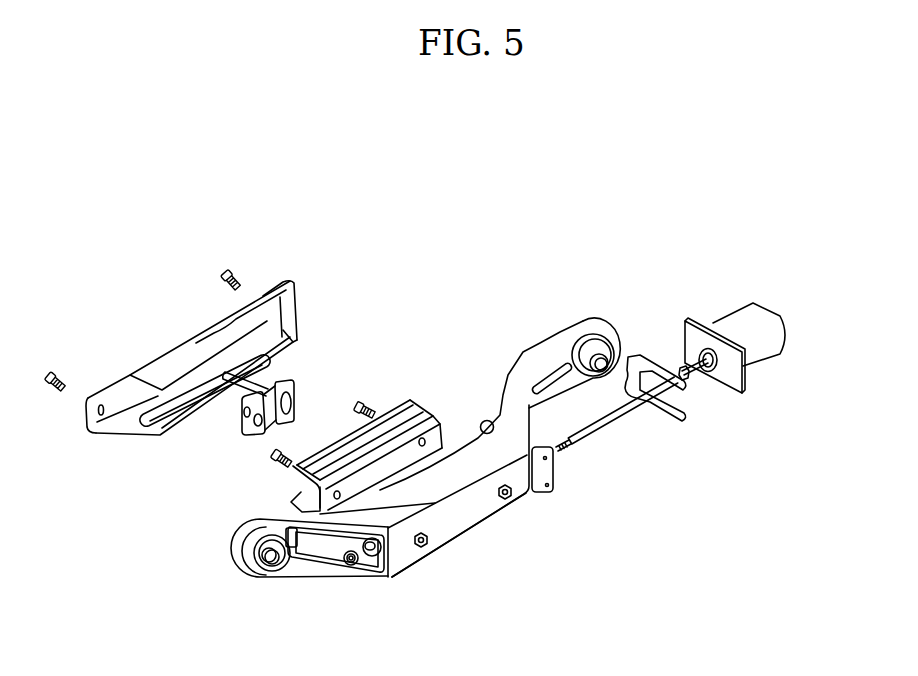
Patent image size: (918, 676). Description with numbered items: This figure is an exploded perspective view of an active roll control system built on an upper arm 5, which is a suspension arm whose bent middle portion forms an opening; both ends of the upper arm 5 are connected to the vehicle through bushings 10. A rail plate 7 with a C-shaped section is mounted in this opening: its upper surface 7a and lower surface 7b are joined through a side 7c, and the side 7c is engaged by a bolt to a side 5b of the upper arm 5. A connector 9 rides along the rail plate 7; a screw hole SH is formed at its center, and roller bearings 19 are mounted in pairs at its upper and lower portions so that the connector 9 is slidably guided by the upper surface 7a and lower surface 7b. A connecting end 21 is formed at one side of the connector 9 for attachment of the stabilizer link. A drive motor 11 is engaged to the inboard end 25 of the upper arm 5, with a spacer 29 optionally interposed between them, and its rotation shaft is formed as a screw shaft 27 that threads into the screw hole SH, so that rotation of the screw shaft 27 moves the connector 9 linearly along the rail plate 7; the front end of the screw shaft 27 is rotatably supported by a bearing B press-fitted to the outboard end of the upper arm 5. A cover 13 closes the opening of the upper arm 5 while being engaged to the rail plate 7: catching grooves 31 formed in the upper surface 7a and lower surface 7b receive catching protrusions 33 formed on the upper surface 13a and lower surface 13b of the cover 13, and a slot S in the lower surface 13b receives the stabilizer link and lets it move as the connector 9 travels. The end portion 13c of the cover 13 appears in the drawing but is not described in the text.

The upper arm 5 is at (422, 457).
The side of the upper arm 5b is at (487, 512).
The rail plate 7 is at (364, 413).
The upper surface of the rail plate 7a is at (419, 402).
The lower surface of the rail plate 7b is at (303, 497).
The side of the rail plate 7c is at (411, 462).
The connector 9 is at (293, 412).
The bushings 10 is at (556, 332).
The drive motor 11 is at (733, 321).
The cover 13 is at (177, 345).
The upper surface of the cover 13a is at (203, 327).
The lower surface of the cover 13b is at (288, 339).
The guide bracket end tab 13c is at (122, 410).
The roller bearings 19 is at (276, 390).
The connecting end 21 is at (275, 330).
The inboard end of the upper arm 25 is at (555, 478).
The screw shaft 27 is at (590, 430).
The spacer 29 is at (665, 415).
The catching grooves 31 is at (406, 432).
The catching protrusions 33 is at (208, 415).
The bearing B is at (340, 568).
The slot S is at (180, 406).
The screw hole SH is at (247, 428).